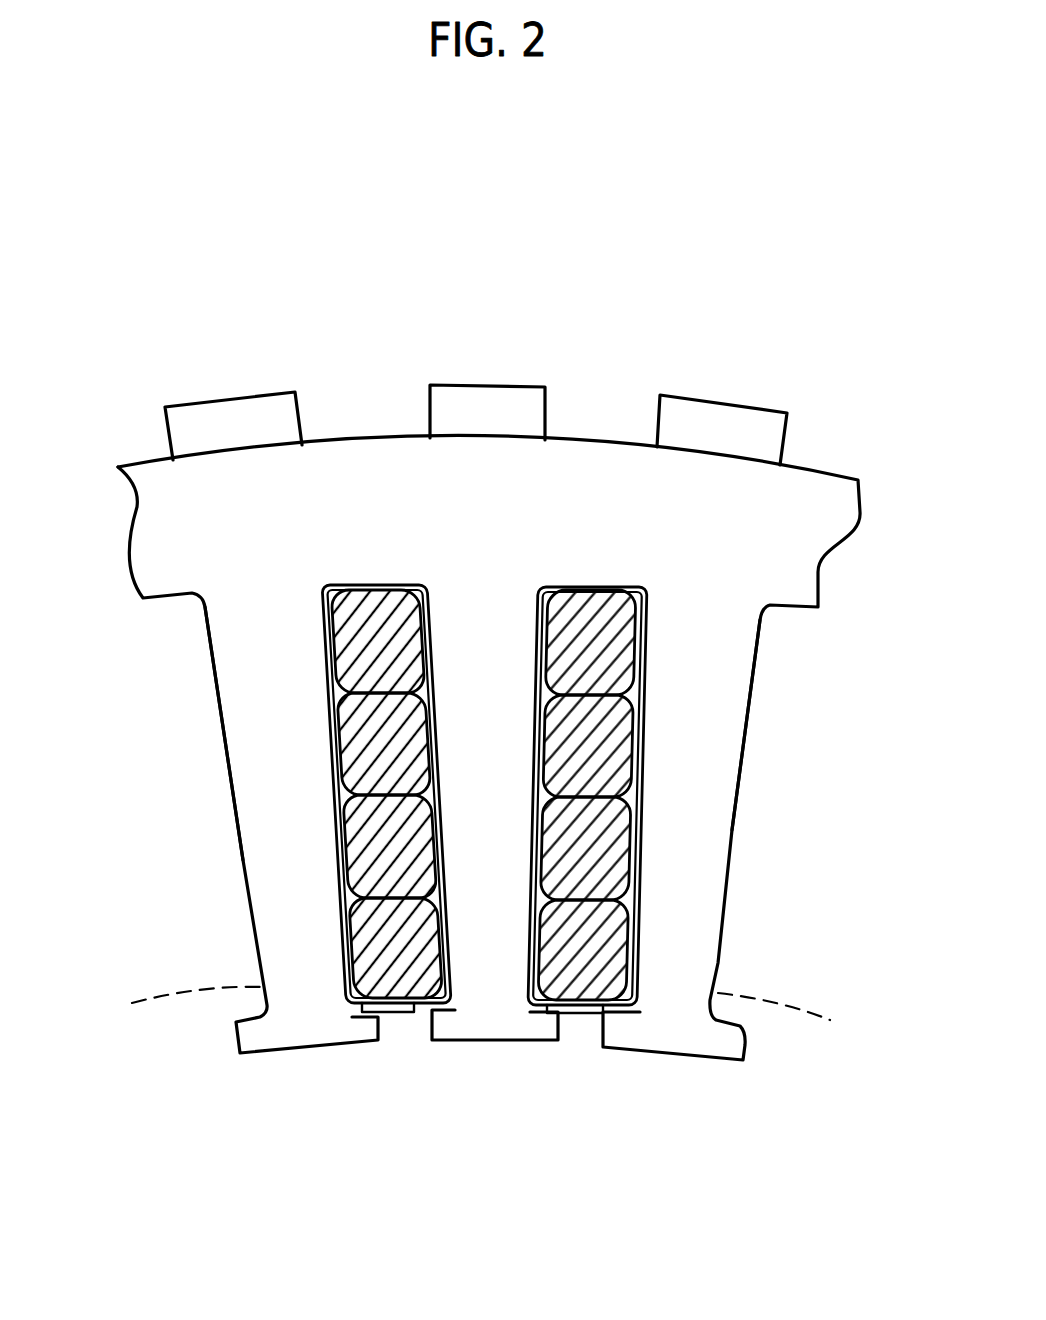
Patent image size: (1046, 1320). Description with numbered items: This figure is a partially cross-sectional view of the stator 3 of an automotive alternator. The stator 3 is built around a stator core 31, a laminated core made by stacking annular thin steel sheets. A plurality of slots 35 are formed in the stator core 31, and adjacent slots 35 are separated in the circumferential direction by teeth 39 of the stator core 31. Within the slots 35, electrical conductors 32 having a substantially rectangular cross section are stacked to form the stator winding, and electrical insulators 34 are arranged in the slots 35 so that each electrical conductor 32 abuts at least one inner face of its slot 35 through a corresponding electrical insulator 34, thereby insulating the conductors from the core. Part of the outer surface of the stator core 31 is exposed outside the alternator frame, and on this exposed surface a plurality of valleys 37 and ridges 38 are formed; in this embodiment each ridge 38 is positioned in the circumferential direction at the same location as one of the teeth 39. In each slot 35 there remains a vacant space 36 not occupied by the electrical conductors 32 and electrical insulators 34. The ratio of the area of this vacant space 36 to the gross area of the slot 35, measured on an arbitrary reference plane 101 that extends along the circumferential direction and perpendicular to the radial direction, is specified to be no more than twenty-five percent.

The stator 3 is at (518, 726).
The stator core 31 is at (387, 473).
The electrical conductors 32 is at (610, 670).
The electrical insulators 34 is at (640, 585).
The slots 35 is at (400, 1012).
The vacant space 36 is at (343, 947).
The valleys 37 is at (343, 428).
The ridges 38 is at (225, 423).
The teeth 39 is at (488, 983).
The arbitrary reference plane 101 is at (478, 1019).